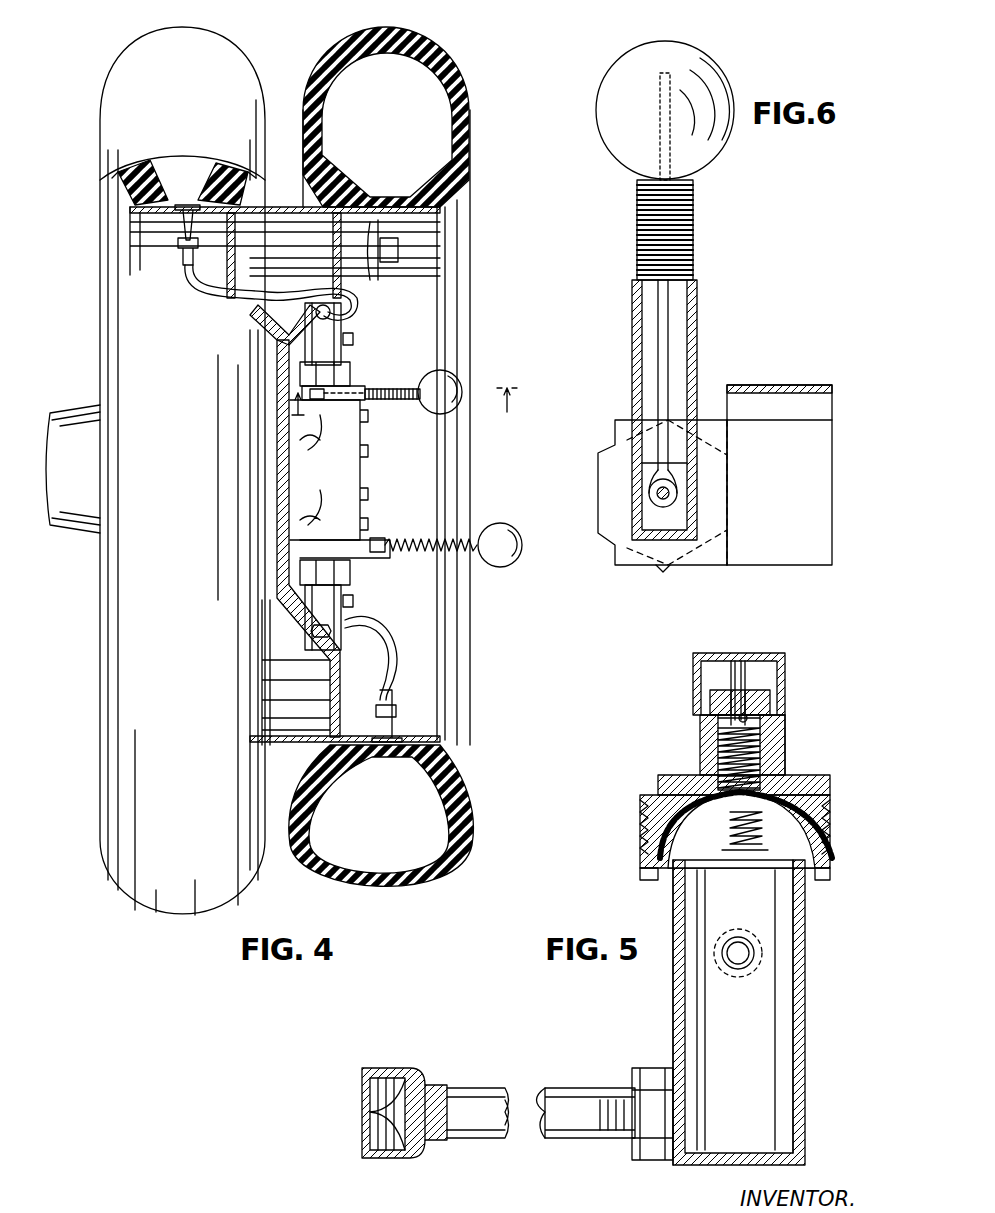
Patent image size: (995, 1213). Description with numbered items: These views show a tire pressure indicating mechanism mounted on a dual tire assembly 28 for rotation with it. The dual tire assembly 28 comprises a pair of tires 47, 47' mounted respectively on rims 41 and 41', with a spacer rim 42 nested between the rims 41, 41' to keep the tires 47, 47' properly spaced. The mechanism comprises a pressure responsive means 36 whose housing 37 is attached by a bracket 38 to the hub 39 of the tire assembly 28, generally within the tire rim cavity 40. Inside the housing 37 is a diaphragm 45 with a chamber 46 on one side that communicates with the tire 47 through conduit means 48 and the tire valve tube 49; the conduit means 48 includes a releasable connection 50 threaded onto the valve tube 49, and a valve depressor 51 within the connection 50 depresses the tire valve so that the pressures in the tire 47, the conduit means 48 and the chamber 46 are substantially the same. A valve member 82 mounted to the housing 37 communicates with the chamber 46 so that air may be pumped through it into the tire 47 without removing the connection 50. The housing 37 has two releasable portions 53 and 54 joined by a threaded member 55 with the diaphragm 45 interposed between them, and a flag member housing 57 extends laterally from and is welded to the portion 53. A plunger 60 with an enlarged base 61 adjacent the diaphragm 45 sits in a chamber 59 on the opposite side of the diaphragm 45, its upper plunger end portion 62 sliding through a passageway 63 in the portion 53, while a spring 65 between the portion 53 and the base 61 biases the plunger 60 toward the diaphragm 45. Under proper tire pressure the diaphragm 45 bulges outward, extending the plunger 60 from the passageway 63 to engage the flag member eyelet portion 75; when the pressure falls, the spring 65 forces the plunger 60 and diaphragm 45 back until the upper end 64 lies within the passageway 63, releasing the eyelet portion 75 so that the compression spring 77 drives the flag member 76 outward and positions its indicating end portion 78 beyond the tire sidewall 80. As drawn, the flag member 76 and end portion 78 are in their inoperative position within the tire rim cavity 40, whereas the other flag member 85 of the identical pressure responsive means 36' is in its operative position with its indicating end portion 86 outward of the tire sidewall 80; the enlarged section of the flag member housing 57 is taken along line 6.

In FIG. 4, the dual tire assembly 28 is at (100, 78).
In FIG. 4, the tire 47 is at (262, 31).
In FIG. 4, the tire 47' is at (392, 453).
In FIG. 4, the tire sidewall 80 is at (470, 168).
In FIG. 4, the rim 41 is at (160, 189).
In FIG. 4, the rim 41' is at (407, 120).
In FIG. 4, the tire valve tube 49 is at (188, 205).
In FIG. 4, the spacer rim 42 is at (290, 207).
In FIG. 4, the releasable connection 50 is at (178, 245).
In FIG. 5, the releasable connection 50 is at (405, 1156).
In FIG. 4, the conduit means 48 is at (290, 290).
In FIG. 5, the conduit means 48 is at (562, 1130).
In FIG. 4, the tire rim cavity 40 is at (457, 300).
In FIG. 4, the pressure responsive means 36 is at (346, 334).
In FIG. 5, the pressure responsive means 36 is at (758, 1012).
In FIG. 4, the valve member 82 is at (353, 340).
In FIG. 5, the valve member 82 is at (738, 937).
In FIG. 4, the housing 37 is at (355, 372).
In FIG. 5, the housing 37 is at (802, 1000).
In FIG. 4, the threaded member 55 is at (302, 372).
In FIG. 6, the threaded member 55 is at (600, 452).
In FIG. 5, the threaded member 55 is at (640, 856).
In FIG. 4, the flag member housing 57 is at (365, 392).
In FIG. 6, the flag member housing 57 is at (697, 328).
In FIG. 5, the flag member housing 57 is at (785, 660).
In FIG. 4, the indicating end portion 78 is at (460, 386).
In FIG. 6, the indicating end portion 78 is at (618, 68).
In FIG. 4, the compression spring 77 is at (395, 402).
In FIG. 6, the compression spring 77 is at (693, 220).
In FIG. 4, the section line 6 is at (407, 414).
In FIG. 4, the bracket 38 is at (368, 436).
In FIG. 6, the bracket 38 is at (778, 385).
In FIG. 4, the hub 39 is at (362, 464).
In FIG. 4, the flag member 85 is at (398, 545).
In FIG. 4, the indicating end portion 86 is at (492, 566).
In FIG. 4, the pressure responsive means 36' is at (353, 662).
In FIG. 6, the flag member 76 is at (658, 318).
In FIG. 6, the plunger 60 is at (656, 493).
In FIG. 5, the plunger 60 is at (745, 668).
In FIG. 6, the flag member eyelet portion 75 is at (665, 502).
In FIG. 5, the flag member eyelet portion 75 is at (748, 716).
In FIG. 5, the upper end of plunger 64 is at (731, 668).
In FIG. 5, the upper plunger end portion 62 is at (710, 700).
In FIG. 5, the passageway 63 is at (760, 716).
In FIG. 5, the spring 65 is at (718, 730).
In FIG. 5, the housing portion 53 is at (700, 750).
In FIG. 5, the enlarged base 61 is at (785, 786).
In FIG. 5, the chamber 59 is at (700, 800).
In FIG. 5, the diaphragm 45 is at (776, 834).
In FIG. 5, the housing portion 54 is at (673, 1004).
In FIG. 5, the chamber 46 is at (762, 1041).
In FIG. 5, the valve depressor 51 is at (370, 1112).